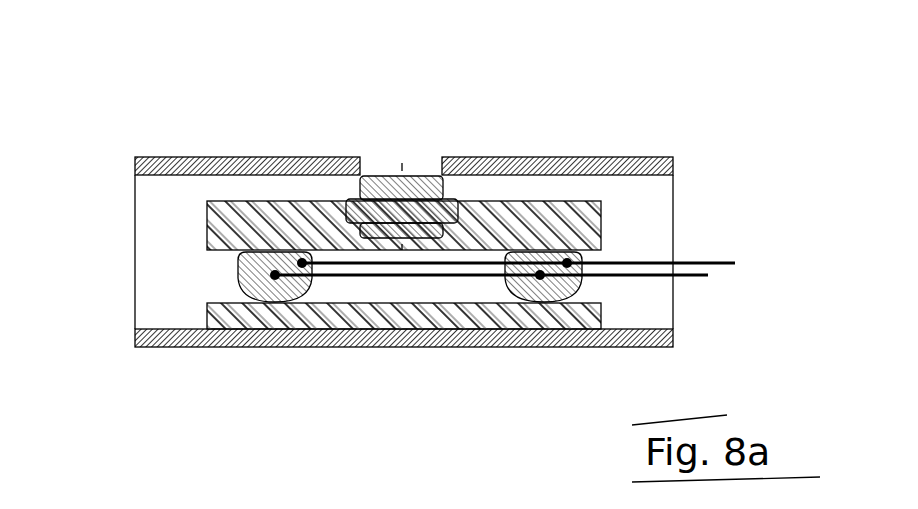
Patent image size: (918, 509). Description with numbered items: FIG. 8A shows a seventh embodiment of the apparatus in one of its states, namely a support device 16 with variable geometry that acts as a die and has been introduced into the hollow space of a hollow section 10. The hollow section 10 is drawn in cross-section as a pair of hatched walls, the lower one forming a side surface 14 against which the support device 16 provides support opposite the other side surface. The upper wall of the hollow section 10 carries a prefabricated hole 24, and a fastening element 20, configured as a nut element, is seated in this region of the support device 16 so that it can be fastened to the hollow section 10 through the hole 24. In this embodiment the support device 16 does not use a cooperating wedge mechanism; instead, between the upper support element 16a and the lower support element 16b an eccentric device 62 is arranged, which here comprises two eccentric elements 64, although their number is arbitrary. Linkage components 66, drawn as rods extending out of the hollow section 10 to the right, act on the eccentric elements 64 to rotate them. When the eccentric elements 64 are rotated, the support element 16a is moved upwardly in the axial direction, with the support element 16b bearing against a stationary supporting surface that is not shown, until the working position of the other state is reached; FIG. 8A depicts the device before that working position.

The hollow section 10 is at (425, 234).
The side surface 14 is at (495, 348).
The support device 16 is at (405, 278).
The support element 16a is at (601, 227).
The support element 16b is at (623, 348).
The fastening element 20 is at (420, 173).
The prefabricated hole 24 is at (372, 163).
The eccentric device 62 is at (440, 338).
The eccentric elements 64 is at (292, 287).
The linkage components 66 is at (700, 277).